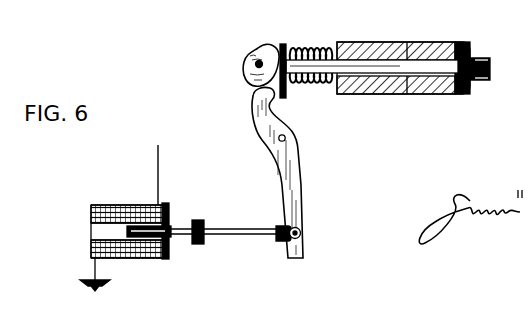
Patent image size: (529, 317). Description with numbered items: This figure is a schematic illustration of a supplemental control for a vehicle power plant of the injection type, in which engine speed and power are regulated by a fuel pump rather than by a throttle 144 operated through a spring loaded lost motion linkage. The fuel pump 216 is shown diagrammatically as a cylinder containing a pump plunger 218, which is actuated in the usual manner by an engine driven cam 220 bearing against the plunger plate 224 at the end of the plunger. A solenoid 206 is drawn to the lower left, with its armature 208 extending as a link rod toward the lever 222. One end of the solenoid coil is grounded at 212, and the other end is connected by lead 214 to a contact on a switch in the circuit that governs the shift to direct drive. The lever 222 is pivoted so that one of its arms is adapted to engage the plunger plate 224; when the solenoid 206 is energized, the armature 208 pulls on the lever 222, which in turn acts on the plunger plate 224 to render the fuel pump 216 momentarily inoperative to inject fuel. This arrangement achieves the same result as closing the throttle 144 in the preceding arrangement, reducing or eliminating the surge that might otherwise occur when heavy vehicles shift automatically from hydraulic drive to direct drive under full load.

The throttle 144 is at (45, 0).
The solenoid 206 is at (128, 205).
The armature 208 is at (260, 231).
The ground 212 is at (110, 283).
The lead 214 is at (160, 151).
The fuel pump 216 is at (396, 42).
The pump plunger 218 is at (380, 42).
The engine driven cam 220 is at (258, 44).
The lever 222 is at (299, 150).
The plunger plate 224 is at (280, 44).